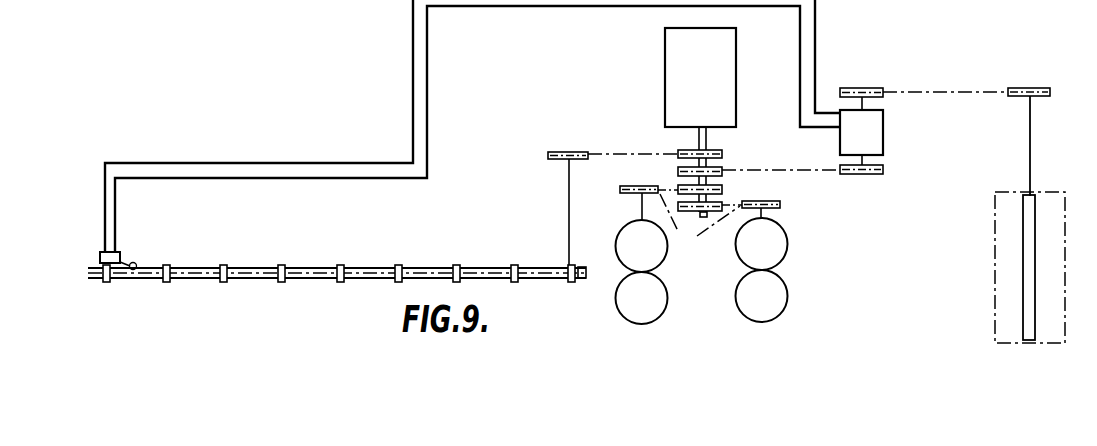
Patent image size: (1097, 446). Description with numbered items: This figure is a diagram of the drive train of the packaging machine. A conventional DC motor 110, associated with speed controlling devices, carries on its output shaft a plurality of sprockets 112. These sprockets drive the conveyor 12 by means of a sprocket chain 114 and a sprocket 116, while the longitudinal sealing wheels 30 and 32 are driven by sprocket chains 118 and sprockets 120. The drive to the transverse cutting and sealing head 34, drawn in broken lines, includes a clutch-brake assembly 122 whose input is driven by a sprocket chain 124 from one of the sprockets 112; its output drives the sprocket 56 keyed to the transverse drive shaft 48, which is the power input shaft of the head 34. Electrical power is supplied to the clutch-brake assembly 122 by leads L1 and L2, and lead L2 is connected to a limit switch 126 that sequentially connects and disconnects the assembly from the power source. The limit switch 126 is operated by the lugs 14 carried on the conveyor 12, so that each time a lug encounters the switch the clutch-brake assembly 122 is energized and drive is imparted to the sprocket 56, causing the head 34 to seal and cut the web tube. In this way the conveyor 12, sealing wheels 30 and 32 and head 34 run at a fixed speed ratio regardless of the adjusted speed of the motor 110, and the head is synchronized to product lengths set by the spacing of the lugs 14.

The lead L1 is at (238, 162).
The lead L2 is at (268, 177).
The limit switch 126 is at (108, 252).
The conveyor 12 is at (268, 279).
The lugs 14 is at (166, 284).
The DC motor 110 is at (665, 57).
The sprockets 112 is at (727, 154).
The sprocket chain 114 is at (653, 150).
The sprocket 116 is at (558, 161).
The sprockets 120 is at (627, 186).
The sprocket chains 118 is at (700, 226).
The sprocket chain 124 is at (770, 170).
The longitudinal sealing wheel 30 is at (662, 296).
The longitudinal sealing wheel 32 is at (789, 297).
The clutch-brake assembly 122 is at (882, 138).
The sprocket 56 is at (1036, 58).
The transverse drive shaft 48 is at (1032, 130).
The transverse cutting and sealing head 34 is at (995, 218).